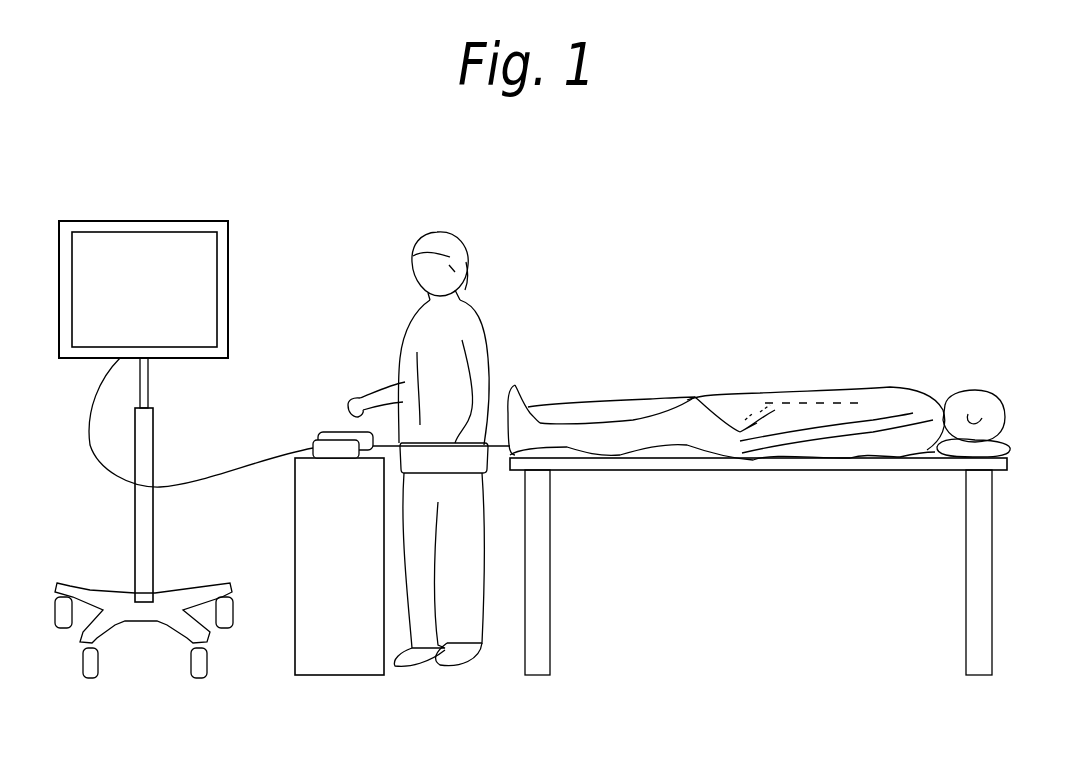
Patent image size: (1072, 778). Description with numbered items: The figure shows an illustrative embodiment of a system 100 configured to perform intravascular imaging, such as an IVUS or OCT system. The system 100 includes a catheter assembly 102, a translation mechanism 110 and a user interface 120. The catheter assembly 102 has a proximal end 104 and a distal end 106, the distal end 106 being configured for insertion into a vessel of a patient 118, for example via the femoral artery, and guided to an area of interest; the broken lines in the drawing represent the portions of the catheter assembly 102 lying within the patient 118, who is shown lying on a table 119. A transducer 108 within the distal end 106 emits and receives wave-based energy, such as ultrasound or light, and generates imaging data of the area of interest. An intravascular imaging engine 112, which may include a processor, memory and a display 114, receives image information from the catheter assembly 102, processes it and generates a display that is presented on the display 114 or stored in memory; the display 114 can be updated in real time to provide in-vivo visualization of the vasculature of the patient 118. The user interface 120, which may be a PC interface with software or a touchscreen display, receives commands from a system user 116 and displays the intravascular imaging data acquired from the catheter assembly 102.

The system 100 is at (348, 140).
The catheter assembly 102 is at (592, 402).
The proximal end 104 is at (418, 426).
The distal end 106 is at (791, 384).
The transducer 108 is at (855, 402).
The translation mechanism 110 is at (335, 405).
The intravascular imaging engine 112 is at (205, 196).
The display 114 is at (198, 258).
The system user 116 is at (472, 308).
The patient 118 is at (960, 390).
The table 119 is at (875, 470).
The user interface 120 is at (160, 220).